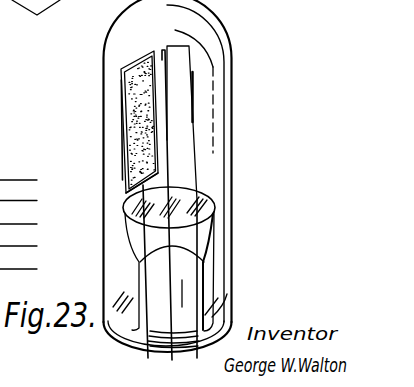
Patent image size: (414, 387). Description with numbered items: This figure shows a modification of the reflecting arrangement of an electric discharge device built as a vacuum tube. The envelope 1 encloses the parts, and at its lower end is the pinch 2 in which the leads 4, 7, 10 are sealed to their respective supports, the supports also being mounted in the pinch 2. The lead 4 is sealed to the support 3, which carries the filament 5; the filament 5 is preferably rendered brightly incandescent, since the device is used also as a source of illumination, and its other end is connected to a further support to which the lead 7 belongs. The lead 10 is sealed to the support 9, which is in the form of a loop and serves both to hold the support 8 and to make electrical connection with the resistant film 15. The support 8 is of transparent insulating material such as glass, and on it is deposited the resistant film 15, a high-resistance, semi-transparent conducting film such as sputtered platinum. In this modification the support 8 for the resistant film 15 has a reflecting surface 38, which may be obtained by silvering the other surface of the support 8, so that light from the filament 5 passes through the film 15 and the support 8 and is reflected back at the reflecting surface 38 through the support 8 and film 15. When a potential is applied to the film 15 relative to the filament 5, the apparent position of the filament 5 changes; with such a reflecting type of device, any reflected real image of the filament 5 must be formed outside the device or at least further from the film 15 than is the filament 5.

The envelope 1 is at (103, 238).
The pinch 2 is at (212, 232).
The support 3 is at (193, 137).
The lead 4 is at (197, 357).
The filament 5 is at (168, 112).
The lead 7 is at (172, 360).
The support 8 is at (123, 70).
The support 9 is at (121, 193).
The lead 10 is at (148, 357).
The resistant film 15 is at (130, 136).
The reflecting surface 38 is at (121, 90).